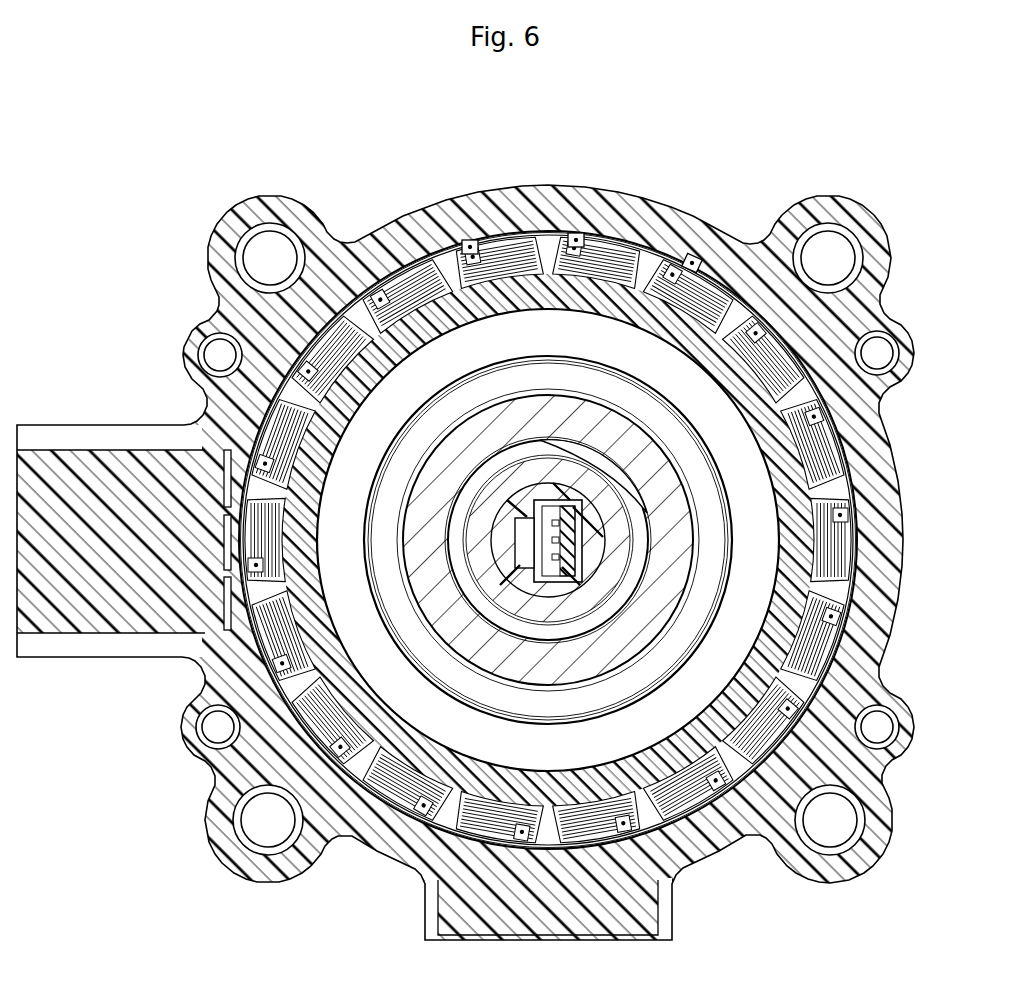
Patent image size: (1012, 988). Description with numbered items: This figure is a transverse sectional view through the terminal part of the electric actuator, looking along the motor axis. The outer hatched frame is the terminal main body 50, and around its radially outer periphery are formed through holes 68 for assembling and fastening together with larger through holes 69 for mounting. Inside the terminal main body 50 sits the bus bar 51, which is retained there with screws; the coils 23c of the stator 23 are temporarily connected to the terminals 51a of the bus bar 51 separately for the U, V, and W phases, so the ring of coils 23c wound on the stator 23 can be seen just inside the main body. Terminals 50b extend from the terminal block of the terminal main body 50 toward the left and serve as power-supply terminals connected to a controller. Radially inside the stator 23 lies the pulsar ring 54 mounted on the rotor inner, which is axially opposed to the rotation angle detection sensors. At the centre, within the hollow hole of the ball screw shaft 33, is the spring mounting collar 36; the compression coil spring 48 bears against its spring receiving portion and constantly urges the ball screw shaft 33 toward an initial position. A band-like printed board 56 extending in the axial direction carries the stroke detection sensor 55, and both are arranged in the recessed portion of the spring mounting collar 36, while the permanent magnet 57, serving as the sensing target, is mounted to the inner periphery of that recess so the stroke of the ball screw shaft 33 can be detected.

The terminal main body 50 is at (902, 541).
The terminals 50b is at (227, 593).
The bus bar 51 is at (806, 509).
The terminals of the bus bar 51a is at (692, 263).
The stator 23 is at (485, 230).
The coils 23c is at (470, 242).
The pulsar ring 54 is at (703, 478).
The compression coil spring 48 is at (610, 463).
The stroke detection sensor 55 is at (565, 550).
The permanent magnet 57 is at (515, 548).
The printed board 56 is at (520, 506).
The spring mounting collar 36 is at (540, 550).
The ball screw shaft 33 is at (597, 590).
The through holes for assembling and fastening 68 is at (878, 352).
The through holes for mounting 69 is at (835, 254).